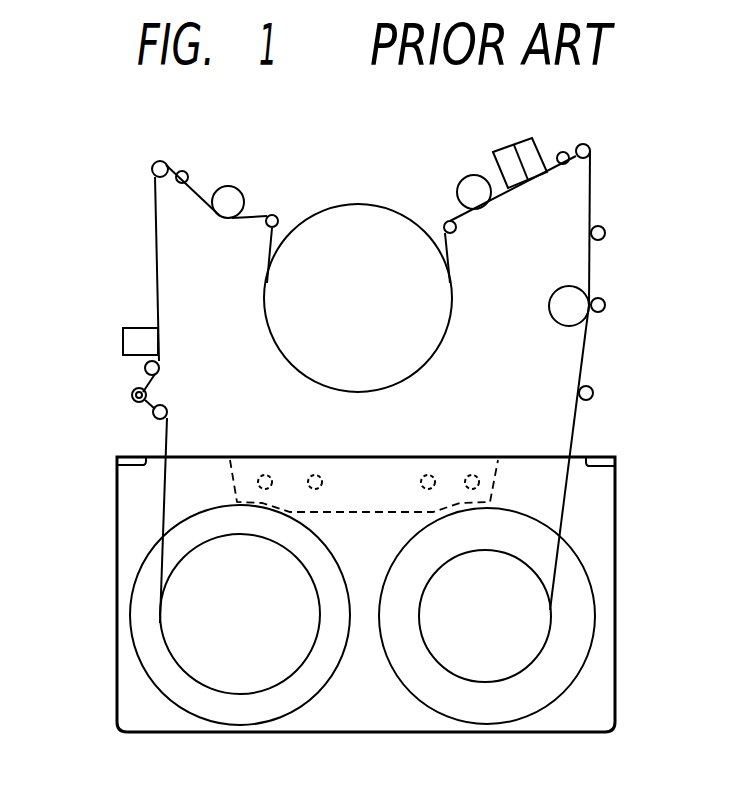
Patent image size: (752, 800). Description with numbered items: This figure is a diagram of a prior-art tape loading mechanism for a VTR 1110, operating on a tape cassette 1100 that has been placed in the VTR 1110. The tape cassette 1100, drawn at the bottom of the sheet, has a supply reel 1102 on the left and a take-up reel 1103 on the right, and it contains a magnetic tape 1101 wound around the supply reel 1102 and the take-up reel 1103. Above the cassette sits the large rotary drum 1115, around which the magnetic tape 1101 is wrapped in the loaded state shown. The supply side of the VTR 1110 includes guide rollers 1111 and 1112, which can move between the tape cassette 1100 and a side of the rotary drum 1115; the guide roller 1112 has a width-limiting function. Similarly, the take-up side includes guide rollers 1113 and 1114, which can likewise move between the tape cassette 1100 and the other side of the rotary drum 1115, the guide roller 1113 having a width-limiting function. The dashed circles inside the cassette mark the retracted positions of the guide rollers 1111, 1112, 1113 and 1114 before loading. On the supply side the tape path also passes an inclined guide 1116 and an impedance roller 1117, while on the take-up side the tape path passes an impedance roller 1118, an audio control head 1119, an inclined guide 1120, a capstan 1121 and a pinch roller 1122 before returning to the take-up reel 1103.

The tape cassette 1100 is at (172, 733).
The magnetic tape 1101 is at (162, 502).
The supply reel 1102 is at (313, 683).
The take-up reel 1103 is at (535, 703).
The VTR 1110 is at (90, 162).
The guide roller 1111 is at (153, 170).
The guide roller 1112 is at (267, 227).
The guide roller 1113 is at (454, 226).
The guide roller 1114 is at (581, 160).
The rotary drum 1115 is at (366, 206).
The inclined guide 1116 is at (186, 171).
The impedance roller 1117 is at (230, 195).
The impedance roller 1118 is at (470, 178).
The audio control head 1119 is at (520, 141).
The inclined guide 1120 is at (563, 151).
The capstan 1121 is at (607, 301).
The pinch roller 1122 is at (552, 307).